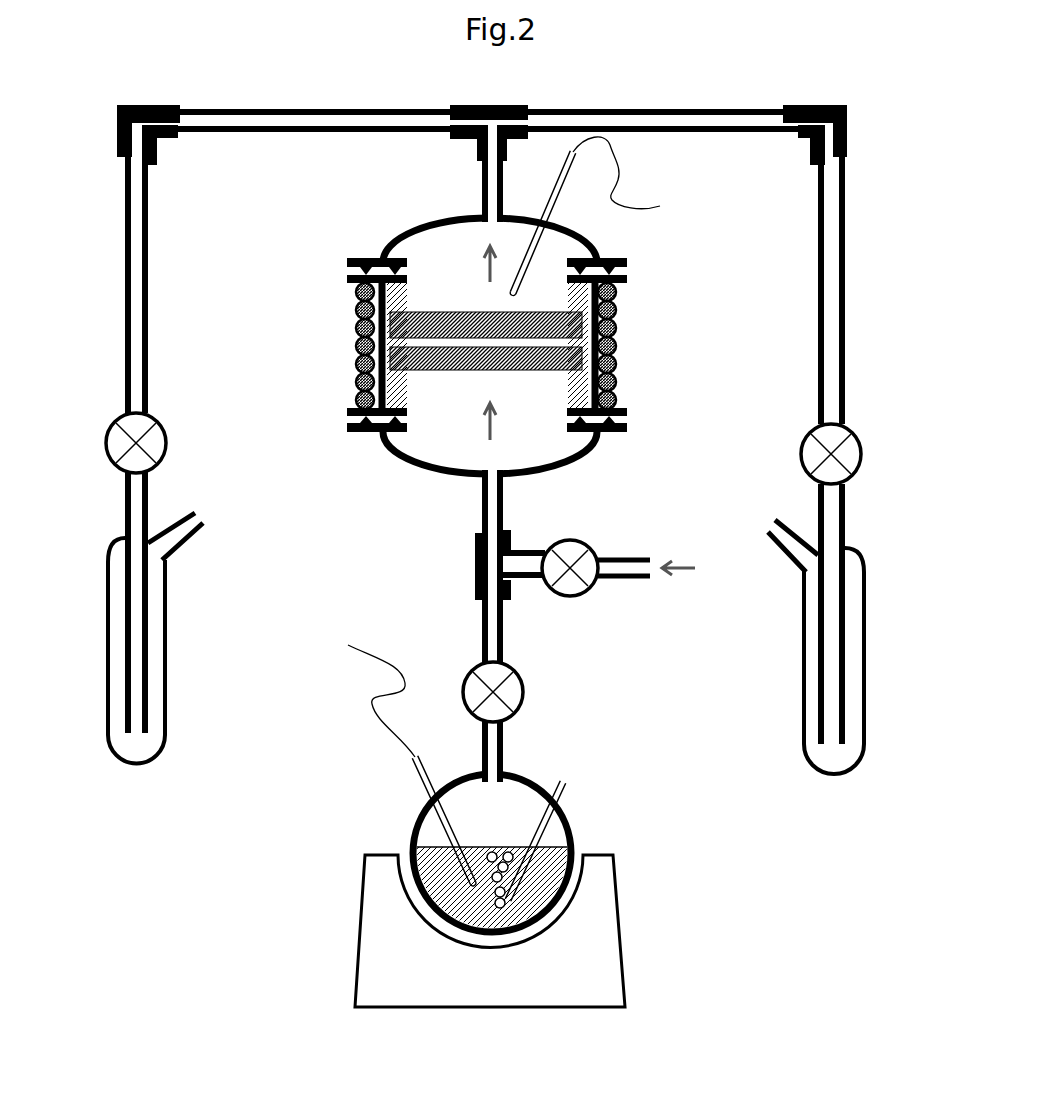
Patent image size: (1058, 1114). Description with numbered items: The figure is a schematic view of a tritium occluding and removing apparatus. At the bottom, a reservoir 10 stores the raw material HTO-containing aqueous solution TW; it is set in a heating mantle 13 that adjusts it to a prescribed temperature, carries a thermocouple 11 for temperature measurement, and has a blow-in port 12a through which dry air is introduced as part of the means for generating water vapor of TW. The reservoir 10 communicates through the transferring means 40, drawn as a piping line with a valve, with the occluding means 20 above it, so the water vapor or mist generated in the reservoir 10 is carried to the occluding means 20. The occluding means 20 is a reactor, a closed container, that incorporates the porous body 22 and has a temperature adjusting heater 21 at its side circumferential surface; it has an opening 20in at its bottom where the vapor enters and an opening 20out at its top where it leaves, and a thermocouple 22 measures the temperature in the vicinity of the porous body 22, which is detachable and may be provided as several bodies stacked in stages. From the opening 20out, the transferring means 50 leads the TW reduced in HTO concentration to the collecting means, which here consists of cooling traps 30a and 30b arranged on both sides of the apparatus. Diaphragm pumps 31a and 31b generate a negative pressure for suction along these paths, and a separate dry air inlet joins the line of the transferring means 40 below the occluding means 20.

The reservoir 10 is at (523, 782).
The thermocouple 1 11 is at (340, 765).
The blow-in port 12a is at (582, 743).
The heating mantle 13 is at (622, 948).
The raw material HTO-containing aqueous solution TW is at (545, 865).
The occluding means 20 is at (398, 233).
The opening 20in is at (477, 477).
The opening 20out is at (487, 214).
The heater 21 is at (571, 341).
The porous body 22 is at (308, 285).
The cooling trap 30a is at (137, 690).
The cooling trap 30b is at (838, 708).
The diaphragm pump 31a is at (200, 510).
The diaphragm pump 31b is at (770, 515).
The transferring means 40 is at (482, 627).
The transferring means 50 is at (285, 143).